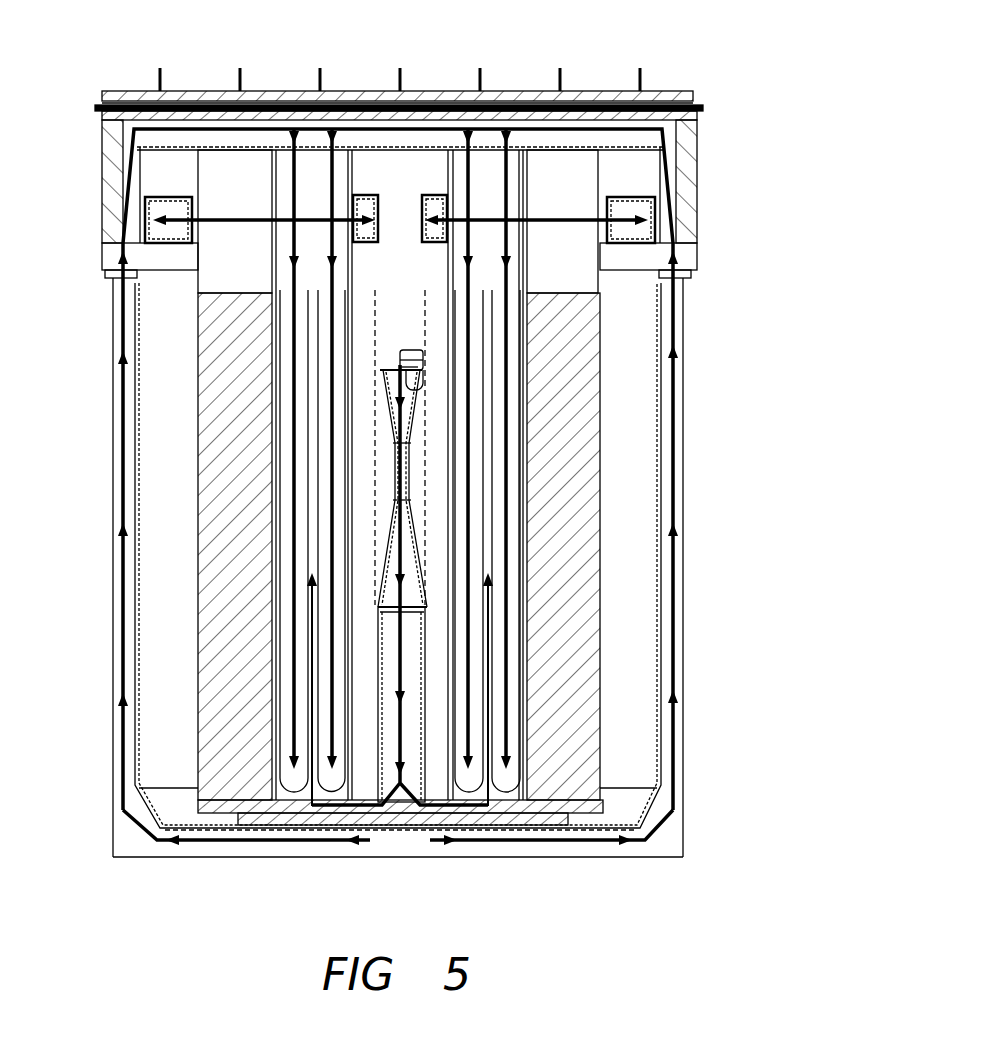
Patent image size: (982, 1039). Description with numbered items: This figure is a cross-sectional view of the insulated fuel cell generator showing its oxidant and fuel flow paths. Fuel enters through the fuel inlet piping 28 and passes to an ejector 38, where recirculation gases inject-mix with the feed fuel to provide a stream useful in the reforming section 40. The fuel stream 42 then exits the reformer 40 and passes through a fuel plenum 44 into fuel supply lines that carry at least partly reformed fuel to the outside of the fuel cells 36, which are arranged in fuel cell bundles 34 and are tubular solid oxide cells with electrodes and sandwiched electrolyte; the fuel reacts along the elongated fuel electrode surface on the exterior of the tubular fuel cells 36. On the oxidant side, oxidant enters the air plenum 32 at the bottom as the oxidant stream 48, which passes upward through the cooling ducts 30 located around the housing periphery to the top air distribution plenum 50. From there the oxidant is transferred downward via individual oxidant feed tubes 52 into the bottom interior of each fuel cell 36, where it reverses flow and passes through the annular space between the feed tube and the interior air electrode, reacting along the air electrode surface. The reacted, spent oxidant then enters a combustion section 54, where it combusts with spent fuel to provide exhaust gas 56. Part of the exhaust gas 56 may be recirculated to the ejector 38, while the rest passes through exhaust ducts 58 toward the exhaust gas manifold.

The fuel inlet piping 28 is at (412, 347).
The cooling ducts 30 is at (685, 450).
The air plenum 32 is at (580, 850).
The fuel cell bundles 34 is at (517, 413).
The fuel cells 36 is at (518, 630).
The ejector 38 is at (385, 433).
The reforming section 40 is at (377, 748).
The fuel stream 42 is at (398, 390).
The fuel plenum 44 is at (368, 885).
The oxidant stream 48 is at (677, 498).
The top air distribution plenum 50 is at (648, 122).
The oxidant feed tubes 52 is at (468, 193).
The combustion section 54 is at (642, 183).
The exhaust gas 56 is at (217, 218).
The exhaust ducts 58 is at (167, 203).